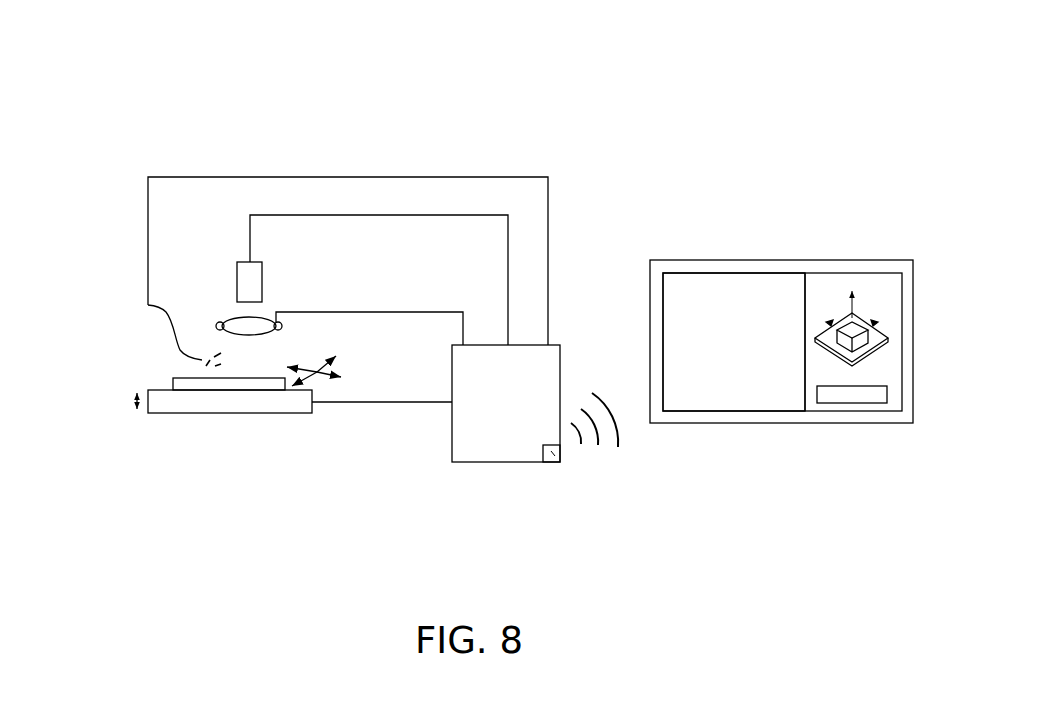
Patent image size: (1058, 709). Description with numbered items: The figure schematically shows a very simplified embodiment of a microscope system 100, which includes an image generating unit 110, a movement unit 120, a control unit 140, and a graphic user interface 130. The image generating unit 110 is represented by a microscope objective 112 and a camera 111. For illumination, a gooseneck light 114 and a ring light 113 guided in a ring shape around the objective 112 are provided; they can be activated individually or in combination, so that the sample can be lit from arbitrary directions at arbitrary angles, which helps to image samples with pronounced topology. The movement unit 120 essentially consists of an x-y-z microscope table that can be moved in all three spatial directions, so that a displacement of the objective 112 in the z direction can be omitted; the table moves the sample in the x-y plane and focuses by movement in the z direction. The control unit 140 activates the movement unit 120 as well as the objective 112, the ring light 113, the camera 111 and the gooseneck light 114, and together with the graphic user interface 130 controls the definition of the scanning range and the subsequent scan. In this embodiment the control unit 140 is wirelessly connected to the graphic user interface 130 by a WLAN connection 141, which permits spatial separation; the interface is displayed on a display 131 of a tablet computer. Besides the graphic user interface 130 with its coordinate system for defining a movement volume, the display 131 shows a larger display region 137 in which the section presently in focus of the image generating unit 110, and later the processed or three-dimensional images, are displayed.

The microscope system 100 is at (587, 153).
The image generating unit 110 is at (154, 166).
The camera 111 is at (243, 230).
The microscope objective 112 is at (230, 318).
The ring light 113 is at (279, 309).
The gooseneck light 114 is at (175, 350).
The movement unit 120 is at (279, 421).
The graphic user interface 130 is at (840, 394).
The display 131 is at (780, 248).
The display region 137 is at (703, 390).
The control unit 140 is at (480, 452).
The WLAN connection 141 is at (555, 465).